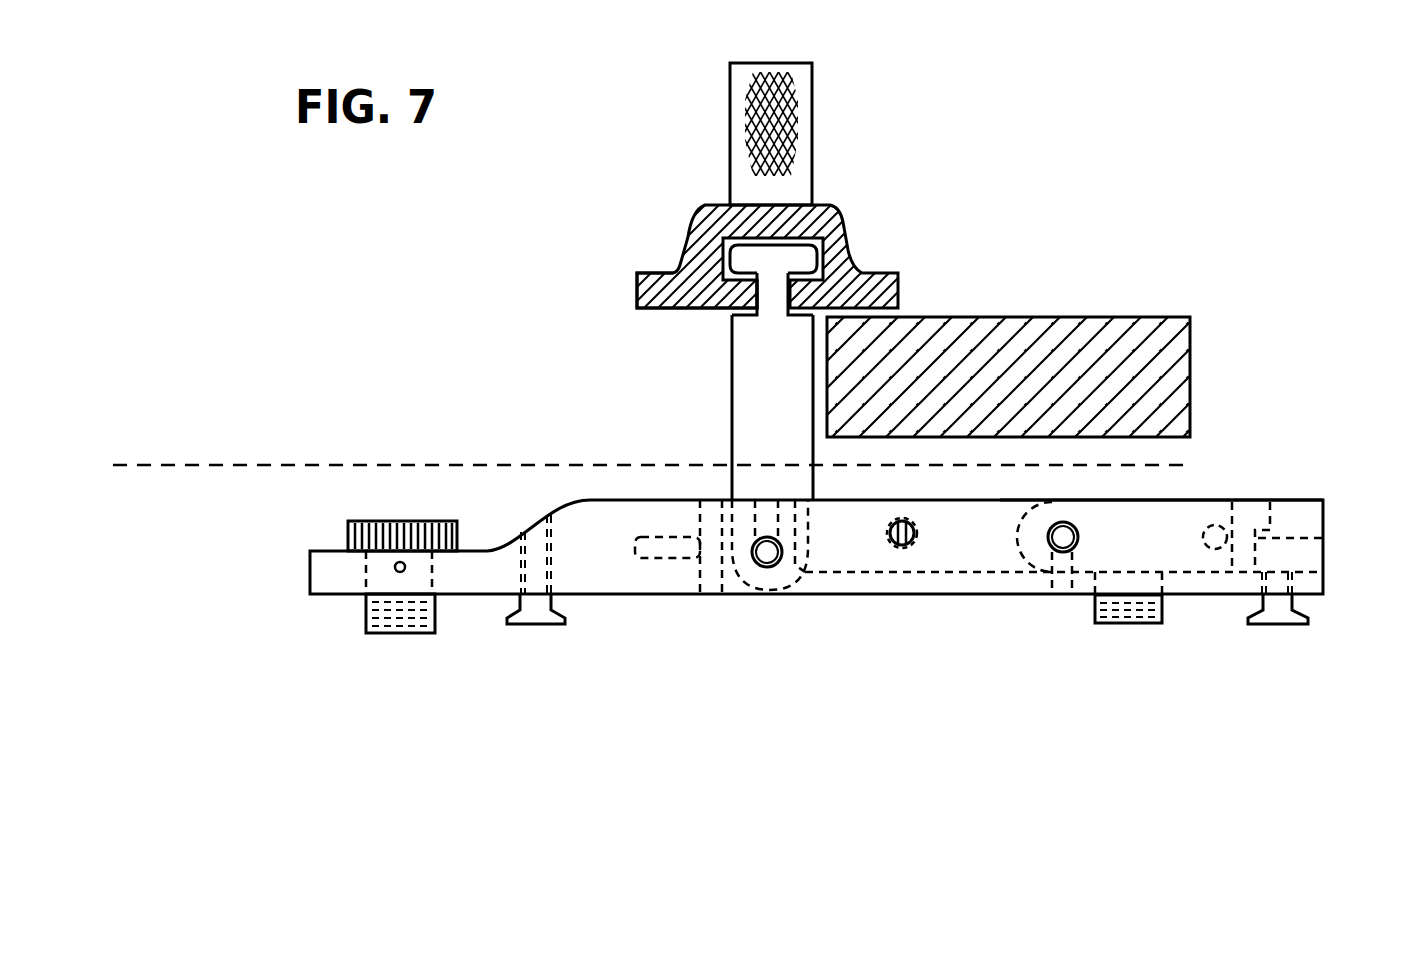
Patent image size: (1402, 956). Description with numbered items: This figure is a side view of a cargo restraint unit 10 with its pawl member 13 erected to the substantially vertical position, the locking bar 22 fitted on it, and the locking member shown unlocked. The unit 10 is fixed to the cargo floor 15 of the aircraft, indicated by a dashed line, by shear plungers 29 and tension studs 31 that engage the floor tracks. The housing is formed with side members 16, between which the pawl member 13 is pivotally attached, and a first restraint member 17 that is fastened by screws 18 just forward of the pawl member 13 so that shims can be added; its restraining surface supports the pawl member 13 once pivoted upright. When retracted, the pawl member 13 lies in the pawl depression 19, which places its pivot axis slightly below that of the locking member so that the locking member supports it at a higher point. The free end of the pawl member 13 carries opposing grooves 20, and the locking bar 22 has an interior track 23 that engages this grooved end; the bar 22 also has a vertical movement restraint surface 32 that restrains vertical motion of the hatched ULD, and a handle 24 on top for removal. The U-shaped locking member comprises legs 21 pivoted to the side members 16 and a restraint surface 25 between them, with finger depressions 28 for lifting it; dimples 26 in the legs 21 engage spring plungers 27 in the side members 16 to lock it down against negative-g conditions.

The cargo restraint unit 10 is at (844, 553).
The pawl member 13 is at (731, 395).
The cargo floor 15 is at (186, 462).
The side members 16 is at (1003, 502).
The first restraint member 17 is at (713, 500).
The screws 18 is at (675, 537).
The pawl depression 19 is at (932, 595).
The grooves 20 is at (727, 313).
The legs 21 is at (1176, 507).
The locking bar 22 is at (850, 235).
The track 23 is at (817, 268).
The handle 24 is at (813, 122).
The restraint surface 25 is at (1323, 540).
The dimples 26 is at (1215, 549).
The spring plungers 27 is at (903, 518).
The finger depressions 28 is at (1262, 502).
The shear plungers 29 is at (437, 522).
The tension studs 31 is at (558, 624).
The vertical movement restraint surface 32 is at (657, 308).
The element ULD is at (1078, 317).